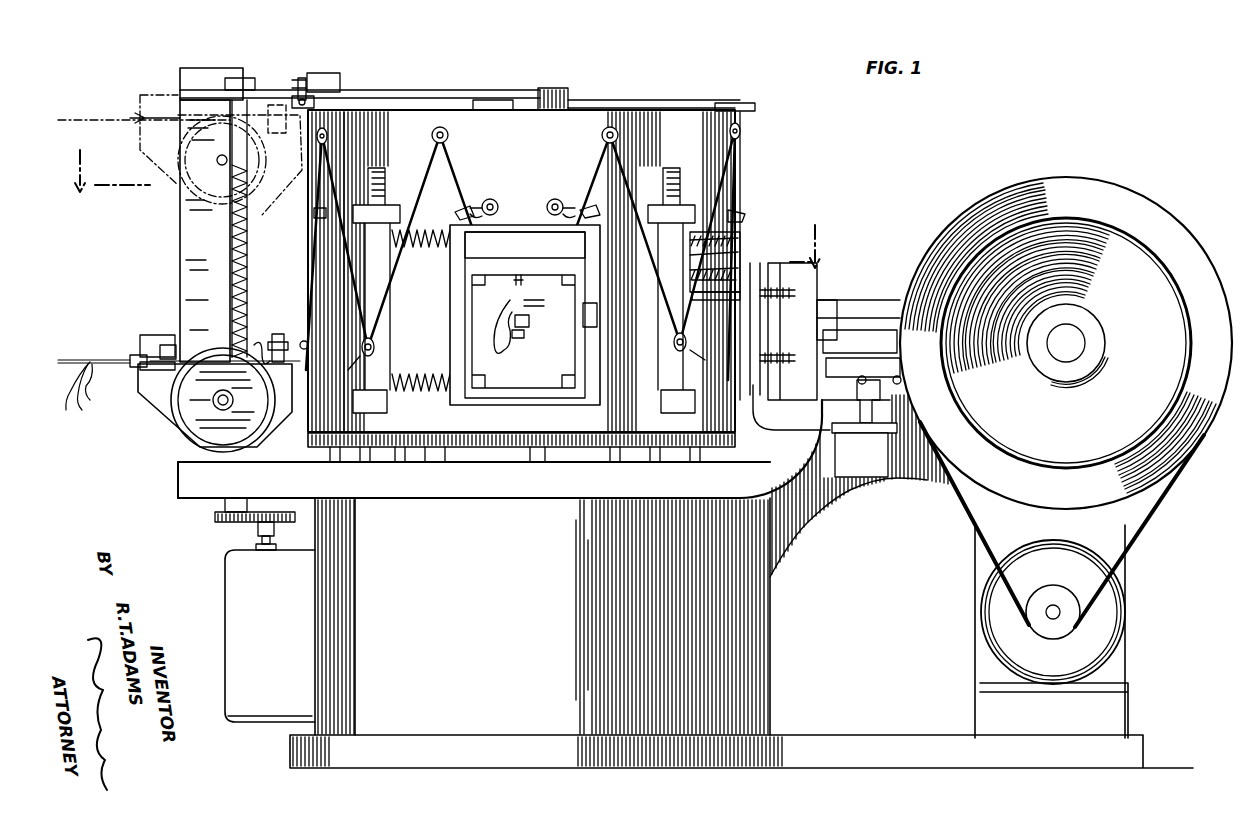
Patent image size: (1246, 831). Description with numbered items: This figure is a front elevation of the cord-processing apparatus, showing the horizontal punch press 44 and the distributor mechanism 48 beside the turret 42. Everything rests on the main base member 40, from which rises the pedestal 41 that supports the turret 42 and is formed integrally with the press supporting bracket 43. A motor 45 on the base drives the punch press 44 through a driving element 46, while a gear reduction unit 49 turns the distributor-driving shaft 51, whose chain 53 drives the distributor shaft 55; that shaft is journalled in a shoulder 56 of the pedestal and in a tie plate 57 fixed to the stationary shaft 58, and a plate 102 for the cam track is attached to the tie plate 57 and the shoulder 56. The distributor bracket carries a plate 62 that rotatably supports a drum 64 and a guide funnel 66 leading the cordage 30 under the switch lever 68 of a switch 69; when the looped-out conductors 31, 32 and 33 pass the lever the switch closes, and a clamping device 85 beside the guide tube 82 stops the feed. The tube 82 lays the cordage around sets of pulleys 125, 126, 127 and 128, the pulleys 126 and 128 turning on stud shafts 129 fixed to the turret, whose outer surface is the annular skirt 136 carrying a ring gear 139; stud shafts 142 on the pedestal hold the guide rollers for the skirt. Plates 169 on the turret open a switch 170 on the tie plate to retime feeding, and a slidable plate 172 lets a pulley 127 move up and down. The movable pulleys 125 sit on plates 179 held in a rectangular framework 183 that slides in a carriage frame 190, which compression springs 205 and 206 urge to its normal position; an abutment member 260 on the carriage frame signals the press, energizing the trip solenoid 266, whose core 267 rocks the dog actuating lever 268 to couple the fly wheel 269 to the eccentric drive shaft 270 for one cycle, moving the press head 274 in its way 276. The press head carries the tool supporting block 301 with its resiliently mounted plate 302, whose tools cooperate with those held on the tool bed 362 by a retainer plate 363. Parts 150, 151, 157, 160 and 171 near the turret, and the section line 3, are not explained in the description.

The section line 3- 3 is at (447, 206).
The cordage 30 is at (70, 358).
The individually insulated conductor 31 is at (71, 393).
The individually insulated conductor 32 is at (82, 398).
The individually insulated conductor 33 is at (88, 392).
The main base member 40 is at (810, 760).
The pedestal 41 is at (335, 668).
The turret 42 is at (659, 104).
The press supporting bracket 43 is at (950, 694).
The punch press 44 is at (1106, 178).
The motor 45 is at (1126, 606).
The driving element 46 is at (1146, 522).
The distributor mechanism 48 is at (214, 60).
The gear reduction unit 49 is at (238, 584).
The distributor-driving shaft 51 is at (258, 540).
The chain 53 is at (250, 524).
The distributor shaft 55 is at (248, 228).
The shoulder 56 is at (540, 492).
The tie plate 57 is at (262, 90).
The stationary shaft 58 is at (537, 104).
The plate 62 is at (160, 398).
The drum 64 is at (212, 422).
The guide funnel 66 is at (133, 356).
The switch lever 68 is at (165, 344).
The switch 69 is at (145, 336).
The guide tube 82 is at (278, 348).
The clamping device 85 is at (262, 340).
The plate 102 is at (183, 236).
The pulleys 125 is at (520, 380).
The pulleys 126 is at (600, 136).
The pulleys 127 is at (378, 336).
The pulleys 128 is at (450, 136).
The stud shafts 129 is at (318, 256).
The annular skirt 136 is at (592, 118).
The ring gear 139 is at (398, 448).
The stud shafts 142 is at (522, 462).
The roller 150 is at (478, 200).
The bracket 151 is at (458, 210).
The roller 157 is at (570, 200).
The bracket 160 is at (313, 212).
The plates 169 is at (318, 100).
The switch 170 is at (330, 74).
The pin 171 is at (298, 80).
The plate 172 is at (380, 356).
The plates 179 is at (470, 301).
The rectangular framework 183 is at (540, 252).
The carriage frame 190 is at (452, 284).
The compression spring 205 is at (425, 248).
The compression spring 206 is at (448, 374).
The abutment member 260 is at (604, 306).
The trip solenoid 266 is at (845, 456).
The core 267 is at (856, 412).
The dog actuating lever 268 is at (900, 358).
The fly wheel 269 is at (1158, 218).
The eccentric drive shaft 270 is at (1078, 338).
The press head 274 is at (836, 300).
The way 276 is at (850, 336).
The tool supporting block 301 is at (808, 380).
The plate 302 is at (755, 398).
The tool bed 362 is at (722, 266).
The retainer plate 363 is at (725, 290).